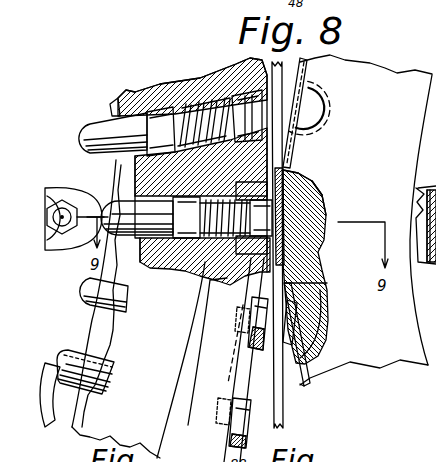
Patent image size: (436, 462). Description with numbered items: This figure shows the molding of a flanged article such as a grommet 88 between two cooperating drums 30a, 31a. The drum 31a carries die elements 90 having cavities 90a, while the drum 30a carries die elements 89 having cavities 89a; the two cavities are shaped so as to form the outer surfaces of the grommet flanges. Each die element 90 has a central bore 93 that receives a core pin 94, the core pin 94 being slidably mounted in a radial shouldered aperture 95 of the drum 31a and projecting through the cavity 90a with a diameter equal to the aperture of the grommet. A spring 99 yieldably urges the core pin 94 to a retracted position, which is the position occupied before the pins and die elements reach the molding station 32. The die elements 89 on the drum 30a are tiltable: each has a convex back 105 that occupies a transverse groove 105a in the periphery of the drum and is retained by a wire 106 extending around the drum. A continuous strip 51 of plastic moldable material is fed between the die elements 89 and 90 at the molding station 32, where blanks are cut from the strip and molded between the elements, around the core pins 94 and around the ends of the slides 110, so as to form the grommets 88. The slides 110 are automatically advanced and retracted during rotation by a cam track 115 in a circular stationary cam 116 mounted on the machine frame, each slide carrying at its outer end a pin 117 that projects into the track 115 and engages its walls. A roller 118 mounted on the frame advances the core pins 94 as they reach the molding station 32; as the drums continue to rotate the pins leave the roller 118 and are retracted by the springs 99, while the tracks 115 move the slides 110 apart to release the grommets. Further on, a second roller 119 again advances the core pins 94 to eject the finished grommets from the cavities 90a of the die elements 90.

The drum 30a is at (366, 358).
The drum 31a is at (97, 428).
The molding station 32 is at (324, 184).
The continuous strip 51 is at (286, 66).
The grommet 88 is at (283, 235).
The die element 89 is at (306, 108).
The cavity 89a is at (312, 200).
The die element 90 is at (245, 52).
The cavity 90a is at (248, 205).
The central bore 93 is at (207, 263).
The core pin 94 is at (292, 168).
The radial shouldered aperture 95 is at (160, 240).
The spring 99 is at (180, 86).
The convex back 105 is at (320, 207).
The transverse groove 105a is at (328, 320).
The wire 106 is at (300, 386).
The slide 110 is at (246, 400).
The cam track 115 is at (228, 383).
The circular stationary cam 116 is at (182, 423).
The pin 117 is at (214, 404).
The roller 118 is at (52, 186).
The second roller 119 is at (63, 356).